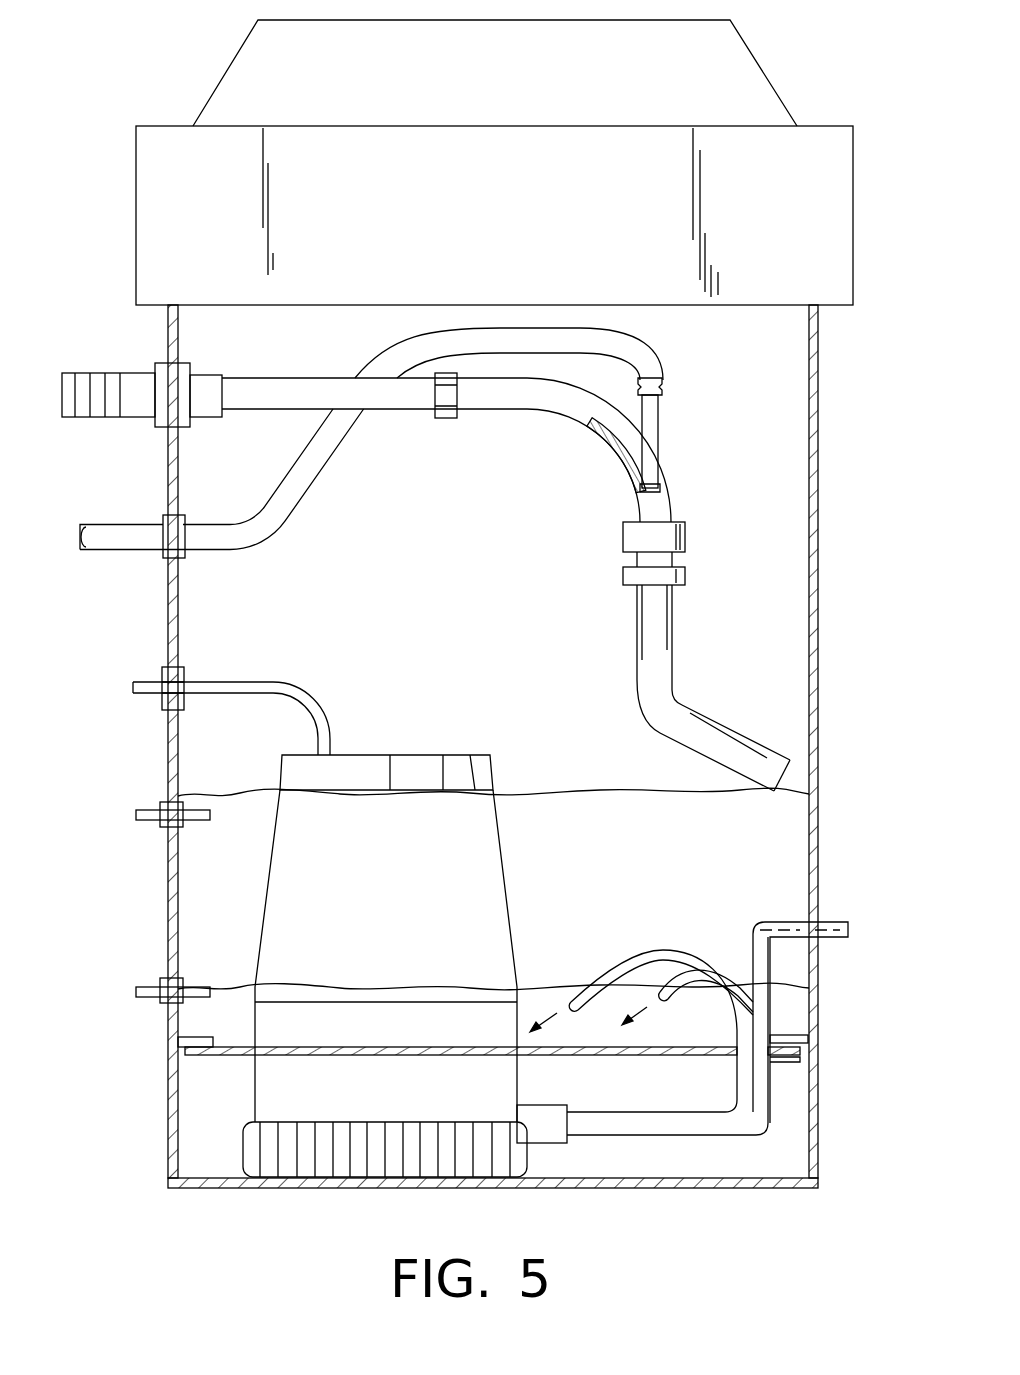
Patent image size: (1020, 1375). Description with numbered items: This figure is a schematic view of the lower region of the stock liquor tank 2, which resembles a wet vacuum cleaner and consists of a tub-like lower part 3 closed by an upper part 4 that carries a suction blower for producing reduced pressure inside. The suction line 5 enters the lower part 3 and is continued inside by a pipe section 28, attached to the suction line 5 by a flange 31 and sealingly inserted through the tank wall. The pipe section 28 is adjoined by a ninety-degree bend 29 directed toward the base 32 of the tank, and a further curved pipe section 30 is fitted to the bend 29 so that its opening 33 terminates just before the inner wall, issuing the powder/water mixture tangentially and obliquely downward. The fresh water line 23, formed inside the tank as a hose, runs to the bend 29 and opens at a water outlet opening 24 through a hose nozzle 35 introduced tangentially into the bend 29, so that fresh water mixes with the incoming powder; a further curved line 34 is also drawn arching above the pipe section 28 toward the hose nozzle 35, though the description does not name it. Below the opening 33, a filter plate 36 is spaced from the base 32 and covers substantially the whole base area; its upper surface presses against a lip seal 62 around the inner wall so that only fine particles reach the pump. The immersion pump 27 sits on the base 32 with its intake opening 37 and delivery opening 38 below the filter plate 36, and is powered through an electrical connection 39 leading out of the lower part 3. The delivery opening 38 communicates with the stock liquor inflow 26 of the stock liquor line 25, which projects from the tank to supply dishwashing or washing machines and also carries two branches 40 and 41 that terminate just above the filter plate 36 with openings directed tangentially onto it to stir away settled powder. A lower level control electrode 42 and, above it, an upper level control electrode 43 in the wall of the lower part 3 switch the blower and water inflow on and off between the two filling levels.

The stock liquor tank 2 is at (120, 248).
The lower part 3 is at (810, 515).
The upper part 4 is at (735, 51).
The suction line 5 is at (115, 417).
The fresh water line 23 is at (130, 537).
The water outlet opening 24 is at (652, 460).
The stock liquor line 25 is at (778, 922).
The stock liquor inflow 26 is at (596, 1150).
The immersion pump 27 is at (470, 762).
The pipe section 28 is at (255, 393).
The bend 29 is at (608, 460).
The curved pipe section 30 is at (677, 703).
The flange 31 is at (198, 382).
The base of the tank 32 is at (725, 1188).
The opening 33 is at (790, 778).
The bypass tube 34 is at (427, 347).
The hose nozzle 35 is at (648, 415).
The filter plate 36 is at (213, 1058).
The intake opening 37 is at (302, 1162).
The delivery opening 38 is at (542, 1128).
The electrical connection 39 is at (223, 678).
The branch 40 is at (637, 957).
The branch 41 is at (733, 978).
The lower level control electrode 42 is at (165, 1002).
The upper level control electrode 43 is at (165, 826).
The lip seal 62 is at (787, 1034).